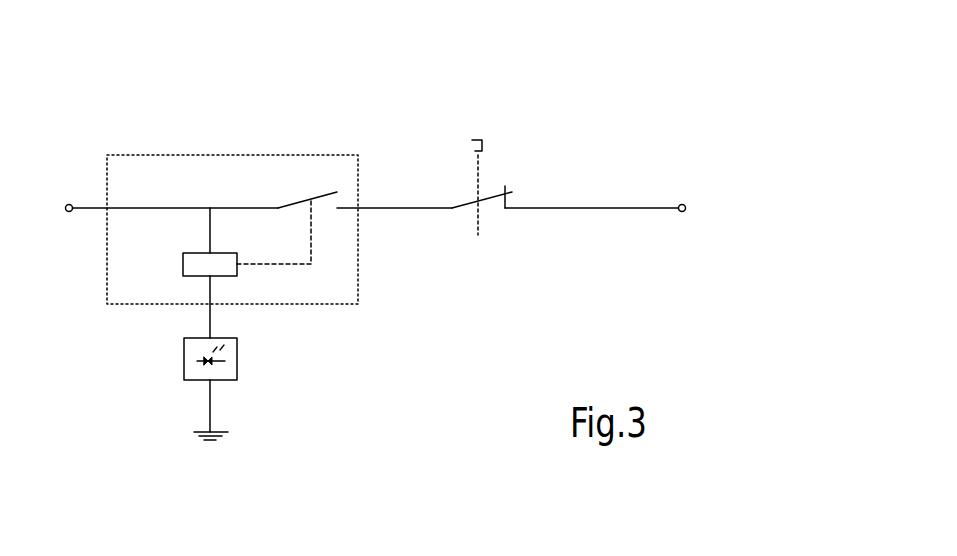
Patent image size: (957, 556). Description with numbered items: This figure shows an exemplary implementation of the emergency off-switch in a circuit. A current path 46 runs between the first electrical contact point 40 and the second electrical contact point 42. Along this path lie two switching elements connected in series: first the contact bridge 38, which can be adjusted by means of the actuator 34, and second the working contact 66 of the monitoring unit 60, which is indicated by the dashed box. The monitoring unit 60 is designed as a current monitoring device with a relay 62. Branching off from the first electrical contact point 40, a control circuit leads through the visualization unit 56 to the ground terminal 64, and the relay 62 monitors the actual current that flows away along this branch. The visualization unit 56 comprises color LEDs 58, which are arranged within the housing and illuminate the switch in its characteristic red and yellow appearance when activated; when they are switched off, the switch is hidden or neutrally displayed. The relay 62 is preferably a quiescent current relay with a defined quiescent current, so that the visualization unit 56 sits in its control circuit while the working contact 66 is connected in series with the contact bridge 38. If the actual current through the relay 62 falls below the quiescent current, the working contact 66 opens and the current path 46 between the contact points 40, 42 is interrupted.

The first electrical contact point 40 is at (66, 204).
The second electrical contact point 42 is at (686, 204).
The actuator 34 is at (486, 153).
The contact bridge 38 is at (488, 200).
The current path 46 is at (604, 208).
The visualization unit 56 is at (237, 373).
The color LEDs 58 is at (214, 357).
The monitoring unit 60 is at (203, 155).
The relay 62 is at (192, 272).
The ground terminal 64 is at (201, 440).
The working contact 66 is at (312, 193).